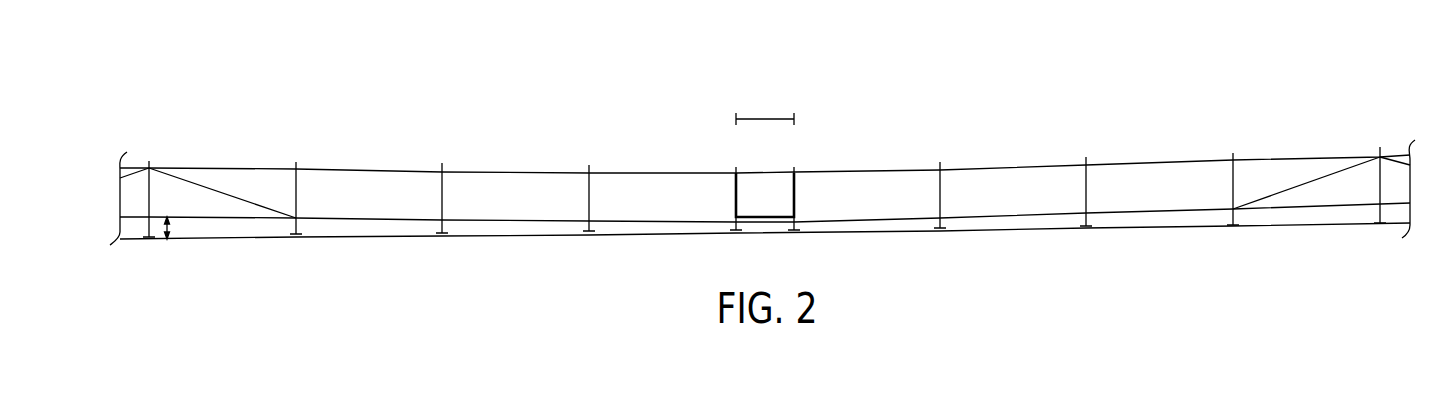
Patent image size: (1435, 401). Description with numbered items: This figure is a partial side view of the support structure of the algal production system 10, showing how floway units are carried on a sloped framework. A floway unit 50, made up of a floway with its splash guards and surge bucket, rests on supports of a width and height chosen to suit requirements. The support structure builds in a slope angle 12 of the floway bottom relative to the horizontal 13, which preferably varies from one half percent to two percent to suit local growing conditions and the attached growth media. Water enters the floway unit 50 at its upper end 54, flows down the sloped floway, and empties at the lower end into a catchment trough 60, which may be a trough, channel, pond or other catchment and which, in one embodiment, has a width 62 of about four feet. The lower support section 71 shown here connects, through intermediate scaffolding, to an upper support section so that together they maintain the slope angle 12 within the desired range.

The algal production system 10 is at (762, 159).
The slope angle 12 is at (171, 228).
The horizontal 13 is at (275, 239).
The floway unit 50 is at (1012, 167).
The upper end 54 is at (718, 172).
The catchment trough 60 is at (763, 185).
The width 62 is at (766, 118).
The lower support section 71 is at (144, 167).